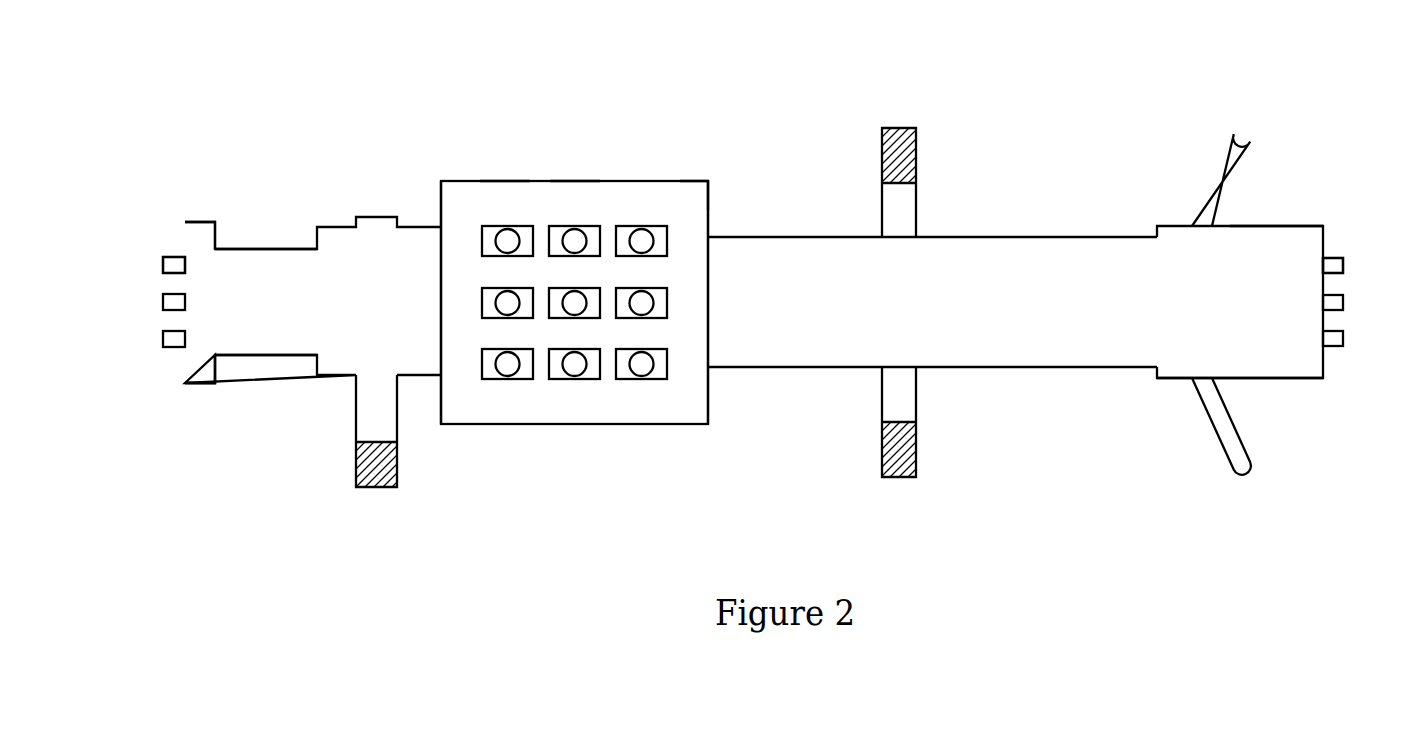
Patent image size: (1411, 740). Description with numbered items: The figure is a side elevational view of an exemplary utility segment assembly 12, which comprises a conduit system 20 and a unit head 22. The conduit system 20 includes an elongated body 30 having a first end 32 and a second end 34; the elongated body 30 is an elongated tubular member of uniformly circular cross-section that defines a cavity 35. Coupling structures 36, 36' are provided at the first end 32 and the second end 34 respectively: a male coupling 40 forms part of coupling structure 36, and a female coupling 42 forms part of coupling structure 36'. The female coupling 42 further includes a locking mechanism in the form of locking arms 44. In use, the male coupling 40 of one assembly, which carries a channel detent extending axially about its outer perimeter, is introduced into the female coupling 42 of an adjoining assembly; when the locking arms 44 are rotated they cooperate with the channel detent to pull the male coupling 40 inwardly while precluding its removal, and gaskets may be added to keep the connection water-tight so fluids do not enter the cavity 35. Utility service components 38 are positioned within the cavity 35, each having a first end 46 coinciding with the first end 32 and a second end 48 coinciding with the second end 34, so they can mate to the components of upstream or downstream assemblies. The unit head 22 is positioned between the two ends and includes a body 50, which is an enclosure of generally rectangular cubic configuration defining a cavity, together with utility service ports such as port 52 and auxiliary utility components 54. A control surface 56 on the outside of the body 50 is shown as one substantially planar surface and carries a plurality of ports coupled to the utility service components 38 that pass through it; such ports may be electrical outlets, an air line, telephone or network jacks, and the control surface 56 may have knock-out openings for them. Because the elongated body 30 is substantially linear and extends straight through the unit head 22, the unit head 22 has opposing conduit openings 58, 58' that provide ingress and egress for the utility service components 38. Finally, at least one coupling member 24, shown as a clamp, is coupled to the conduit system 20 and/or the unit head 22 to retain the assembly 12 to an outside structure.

The utility segment assembly 12 is at (507, 88).
The conduit system 20 is at (222, 410).
The unit head 22 is at (628, 181).
The coupling member 24 is at (882, 407).
The elongated body 30 is at (1020, 236).
The first end 32 is at (185, 241).
The second end 34 is at (1308, 226).
The cavity 35 is at (1345, 285).
The coupling structure 36 is at (175, 369).
The coupling structure 36' is at (1240, 413).
The utility service components 38 is at (153, 300).
The male coupling 40 is at (248, 246).
The female coupling 42 is at (1268, 225).
The locking arms 44 is at (1204, 172).
The first end 46 is at (163, 265).
The second end 48 is at (1343, 262).
The body 50 is at (505, 181).
The port 52 is at (499, 384).
The auxiliary utility components 54 is at (575, 169).
The control surface 56 is at (683, 188).
The conduit opening 58 is at (420, 302).
The conduit opening 58' is at (736, 302).